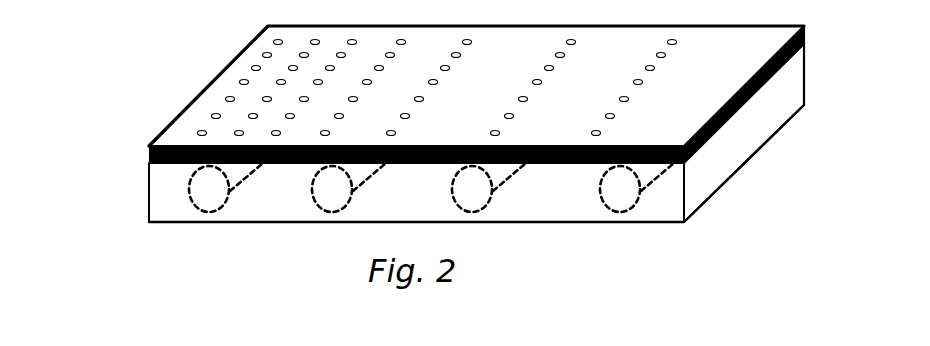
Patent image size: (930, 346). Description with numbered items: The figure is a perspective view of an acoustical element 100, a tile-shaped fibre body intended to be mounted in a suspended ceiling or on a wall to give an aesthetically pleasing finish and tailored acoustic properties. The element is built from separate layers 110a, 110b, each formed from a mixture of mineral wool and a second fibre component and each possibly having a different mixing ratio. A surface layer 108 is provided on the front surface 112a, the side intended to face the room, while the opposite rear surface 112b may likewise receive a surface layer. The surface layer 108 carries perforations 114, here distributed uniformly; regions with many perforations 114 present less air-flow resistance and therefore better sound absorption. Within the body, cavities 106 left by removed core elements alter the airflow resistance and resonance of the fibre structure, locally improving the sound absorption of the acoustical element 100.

The acoustical element 100 is at (786, 209).
The cavity 106 is at (190, 193).
The surface layer 108 is at (195, 128).
The layer 110a is at (147, 153).
The layer 110b is at (158, 212).
The front surface 112a is at (227, 78).
The rear surface 112b is at (238, 223).
The perforations 114 is at (273, 43).